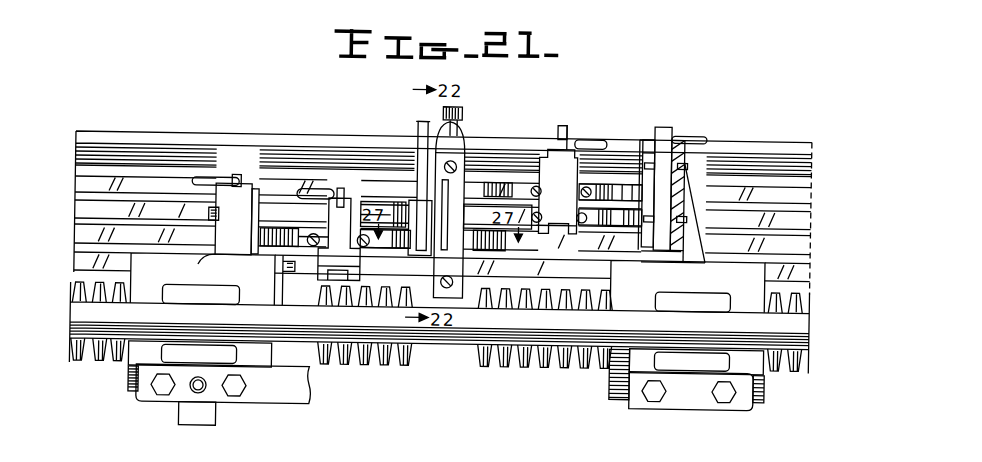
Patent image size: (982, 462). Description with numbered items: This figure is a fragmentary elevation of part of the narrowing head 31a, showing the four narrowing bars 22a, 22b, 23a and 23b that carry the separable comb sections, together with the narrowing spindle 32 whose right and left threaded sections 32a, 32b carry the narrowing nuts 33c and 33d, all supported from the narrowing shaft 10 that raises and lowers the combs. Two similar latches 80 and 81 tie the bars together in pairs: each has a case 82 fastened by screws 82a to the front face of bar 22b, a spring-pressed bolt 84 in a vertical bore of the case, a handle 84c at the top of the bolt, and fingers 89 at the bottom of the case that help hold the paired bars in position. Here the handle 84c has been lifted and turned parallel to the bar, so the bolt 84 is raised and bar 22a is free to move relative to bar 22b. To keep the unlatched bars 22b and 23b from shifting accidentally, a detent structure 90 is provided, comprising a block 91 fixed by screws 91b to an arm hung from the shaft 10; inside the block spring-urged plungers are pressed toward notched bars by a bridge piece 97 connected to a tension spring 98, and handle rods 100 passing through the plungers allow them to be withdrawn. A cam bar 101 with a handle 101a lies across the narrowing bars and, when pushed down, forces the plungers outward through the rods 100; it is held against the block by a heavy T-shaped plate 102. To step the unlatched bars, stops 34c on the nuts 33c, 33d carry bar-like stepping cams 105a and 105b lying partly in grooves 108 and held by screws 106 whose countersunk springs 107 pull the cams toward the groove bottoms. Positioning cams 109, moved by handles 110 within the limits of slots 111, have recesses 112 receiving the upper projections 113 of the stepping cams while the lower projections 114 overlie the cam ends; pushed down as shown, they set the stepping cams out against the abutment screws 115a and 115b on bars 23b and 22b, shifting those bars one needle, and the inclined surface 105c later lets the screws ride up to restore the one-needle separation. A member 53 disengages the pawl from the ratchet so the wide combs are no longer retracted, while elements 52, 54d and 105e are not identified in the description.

The narrowing shaft 10 is at (85, 137).
The narrowing head 31a is at (187, 16).
The stop 34c is at (740, 153).
The narrowing bar 23b is at (85, 177).
The narrowing bar 23a is at (83, 202).
The narrowing bar 22b is at (82, 230).
The narrowing bar 22a is at (80, 258).
The narrowing spindle 32 is at (440, 354).
The right threaded section 32a is at (590, 357).
The left threaded section 32b is at (290, 360).
The narrowing nut 33c is at (645, 393).
The narrowing nut 33d is at (152, 354).
The block 52 is at (200, 403).
The member 53 is at (270, 382).
The inclined surface 105c is at (247, 242).
The latch 80 is at (287, 260).
The right block 105e is at (655, 239).
The screws 106 is at (228, 203).
The handles 110 is at (238, 178).
The post 54d is at (234, 173).
The positioning cams 109 is at (258, 187).
The stepping cam 105b is at (257, 180).
The abutment screw 115b is at (267, 222).
The bolt 84 is at (335, 196).
The handle 84c is at (302, 185).
The screws 82a is at (352, 184).
The case 82 is at (337, 278).
The fingers 89 is at (325, 268).
The T-shaped plate 102 is at (400, 200).
The handle 101a is at (418, 126).
The cam bar 101 is at (459, 108).
The detent structure 90 is at (450, 194).
The screws 91b is at (453, 159).
The bridge piece 97 is at (465, 179).
The tension spring 98 is at (470, 204).
The block 91 is at (462, 284).
The handle rods 100 is at (478, 241).
The latch 81 is at (573, 162).
The abutment screw 115a is at (638, 181).
The projection 113 is at (668, 126).
The stepping cam 105a is at (660, 141).
The recesses 112 is at (690, 130).
The springs 107 is at (688, 165).
The grooves 108 is at (712, 205).
The projection 114 is at (667, 237).
The slots 111 is at (695, 243).